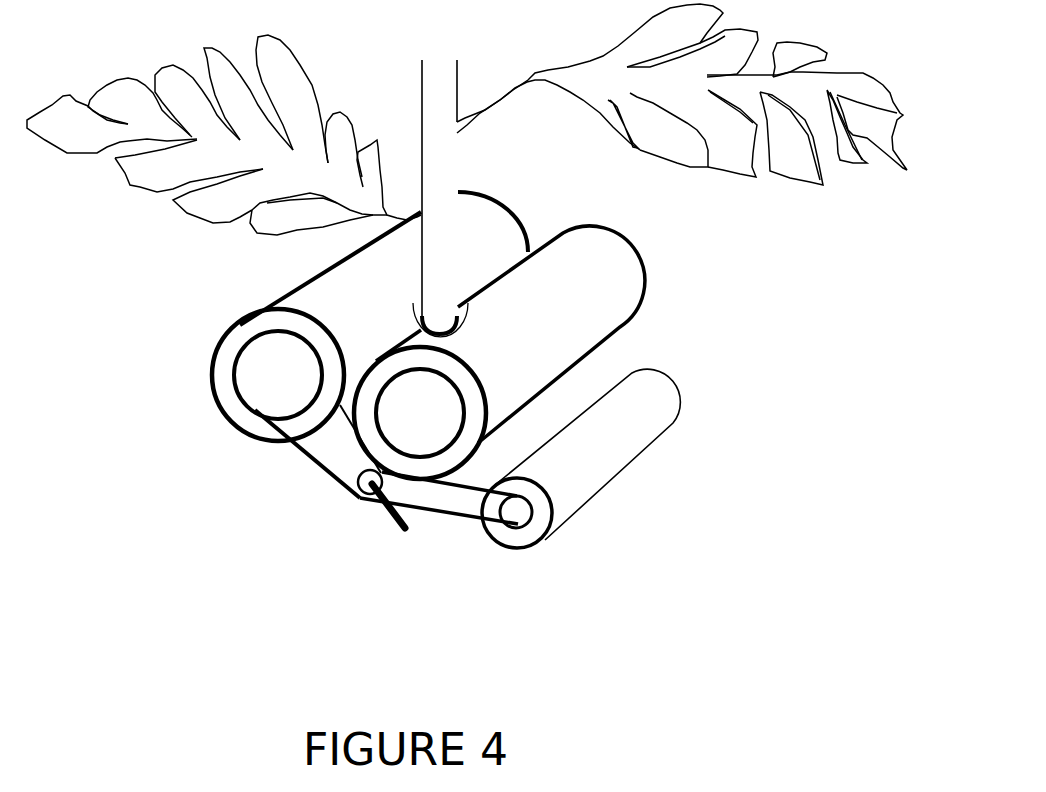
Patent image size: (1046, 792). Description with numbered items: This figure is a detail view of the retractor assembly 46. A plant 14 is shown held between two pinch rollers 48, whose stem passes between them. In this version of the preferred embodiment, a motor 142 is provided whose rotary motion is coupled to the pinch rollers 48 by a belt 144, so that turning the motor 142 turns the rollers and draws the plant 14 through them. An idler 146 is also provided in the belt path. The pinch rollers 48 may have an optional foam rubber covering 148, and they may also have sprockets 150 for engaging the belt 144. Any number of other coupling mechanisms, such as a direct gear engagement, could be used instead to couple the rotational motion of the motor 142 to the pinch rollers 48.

The retractor assembly 46 is at (188, 566).
The plant 14 is at (435, 240).
The foam rubber covering 148 is at (338, 308).
The sprockets 150 is at (240, 415).
The pinch rollers 48 is at (593, 260).
The motor 142 is at (527, 532).
The belt 144 is at (308, 457).
The idler 146 is at (387, 513).